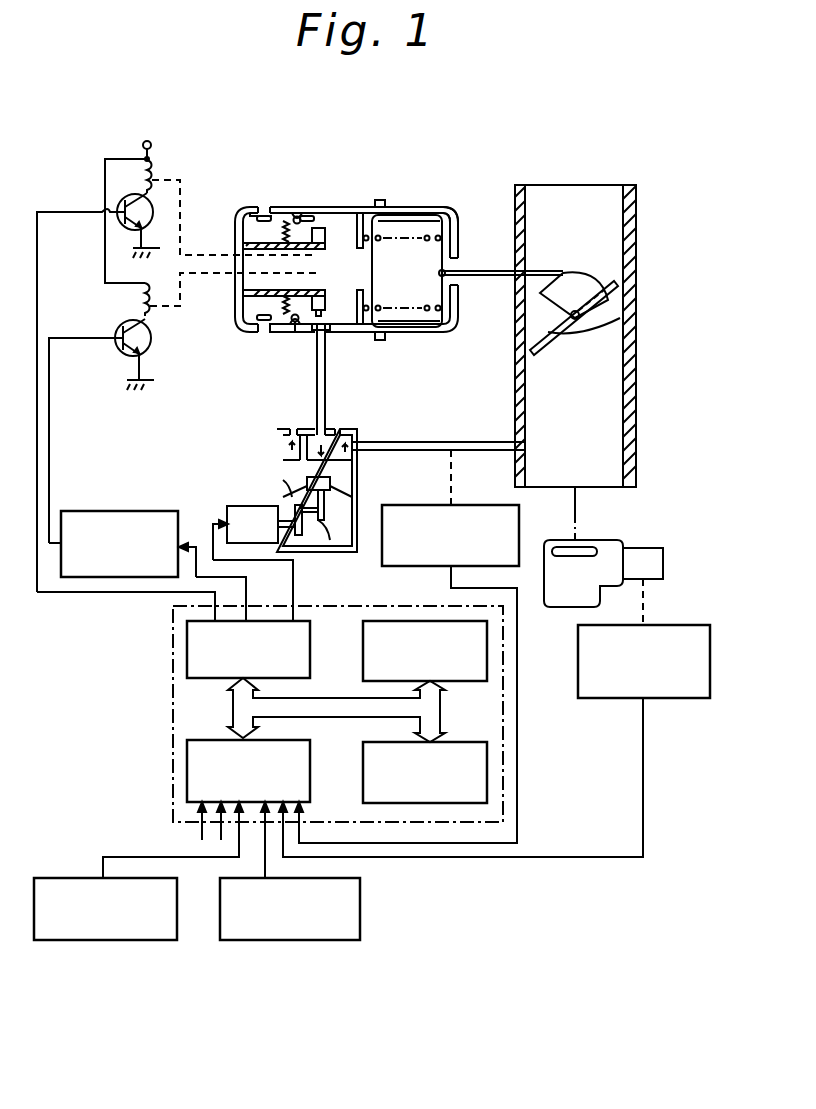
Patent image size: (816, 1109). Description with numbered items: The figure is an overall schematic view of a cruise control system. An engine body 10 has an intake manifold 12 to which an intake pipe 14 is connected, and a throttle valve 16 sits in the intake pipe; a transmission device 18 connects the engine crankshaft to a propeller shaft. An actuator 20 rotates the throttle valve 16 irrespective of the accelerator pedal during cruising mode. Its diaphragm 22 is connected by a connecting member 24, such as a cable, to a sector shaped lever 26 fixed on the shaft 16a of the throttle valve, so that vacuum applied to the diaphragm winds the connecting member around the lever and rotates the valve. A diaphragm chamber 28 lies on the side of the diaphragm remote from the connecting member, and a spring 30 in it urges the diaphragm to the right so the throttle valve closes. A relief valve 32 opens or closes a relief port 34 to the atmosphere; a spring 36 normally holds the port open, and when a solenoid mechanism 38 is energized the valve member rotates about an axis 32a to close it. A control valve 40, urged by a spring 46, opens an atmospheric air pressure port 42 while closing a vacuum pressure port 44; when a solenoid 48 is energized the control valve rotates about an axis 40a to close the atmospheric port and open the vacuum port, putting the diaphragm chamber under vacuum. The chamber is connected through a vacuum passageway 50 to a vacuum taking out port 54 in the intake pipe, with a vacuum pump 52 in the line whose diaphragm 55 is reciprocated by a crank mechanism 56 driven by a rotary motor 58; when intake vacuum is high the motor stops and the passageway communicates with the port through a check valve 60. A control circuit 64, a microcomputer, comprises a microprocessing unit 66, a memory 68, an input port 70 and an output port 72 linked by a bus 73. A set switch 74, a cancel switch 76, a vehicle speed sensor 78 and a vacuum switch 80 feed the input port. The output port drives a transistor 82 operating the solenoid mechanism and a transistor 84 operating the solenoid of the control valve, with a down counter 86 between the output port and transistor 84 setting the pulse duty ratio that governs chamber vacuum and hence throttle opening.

The engine body 10 is at (610, 540).
The intake manifold 12 is at (562, 546).
The intake pipe 14 is at (636, 399).
The throttle valve 16 is at (588, 354).
The shaft of the throttle valve 16a is at (580, 318).
The transmission device 18 is at (654, 544).
The actuator 20 is at (424, 181).
The diaphragm 22 is at (434, 212).
The connecting member 24 is at (486, 276).
The sector shaped lever 26 is at (598, 278).
The diaphragm chamber 28 is at (414, 277).
The spring 30 is at (428, 311).
The relief valve 32 is at (298, 215).
The axis 32a is at (300, 216).
The relief port 34 is at (268, 205).
The spring 36 is at (282, 242).
The solenoid mechanism 38 is at (326, 233).
The control valve 40 is at (292, 326).
The axis 40a is at (298, 334).
The atmospheric air pressure port 42 is at (258, 338).
The vacuum pressure port 44 is at (327, 338).
The spring 46 is at (284, 310).
The solenoid 48 is at (335, 302).
The vacuum passageway 50 is at (328, 384).
The vacuum pump 52 is at (380, 494).
The vacuum taking out port 54 is at (528, 450).
The diaphragm 55 is at (276, 477).
The crank mechanism 56 is at (332, 546).
The rotary motor 58 is at (226, 504).
The check valve 60 is at (354, 429).
The control circuit 64 is at (158, 700).
The microprocessing unit 66 is at (410, 621).
The memory 68 is at (472, 741).
The input port 70 is at (312, 766).
The output port 72 is at (312, 638).
The bus 73 is at (340, 695).
The set switch 74 is at (328, 940).
The cancel switch 76 is at (150, 940).
The vehicle speed sensor 78 is at (676, 625).
The vacuum switch 80 is at (496, 506).
The transistor 82 is at (120, 198).
The transistor 84 is at (122, 358).
The down counter 86 is at (128, 510).